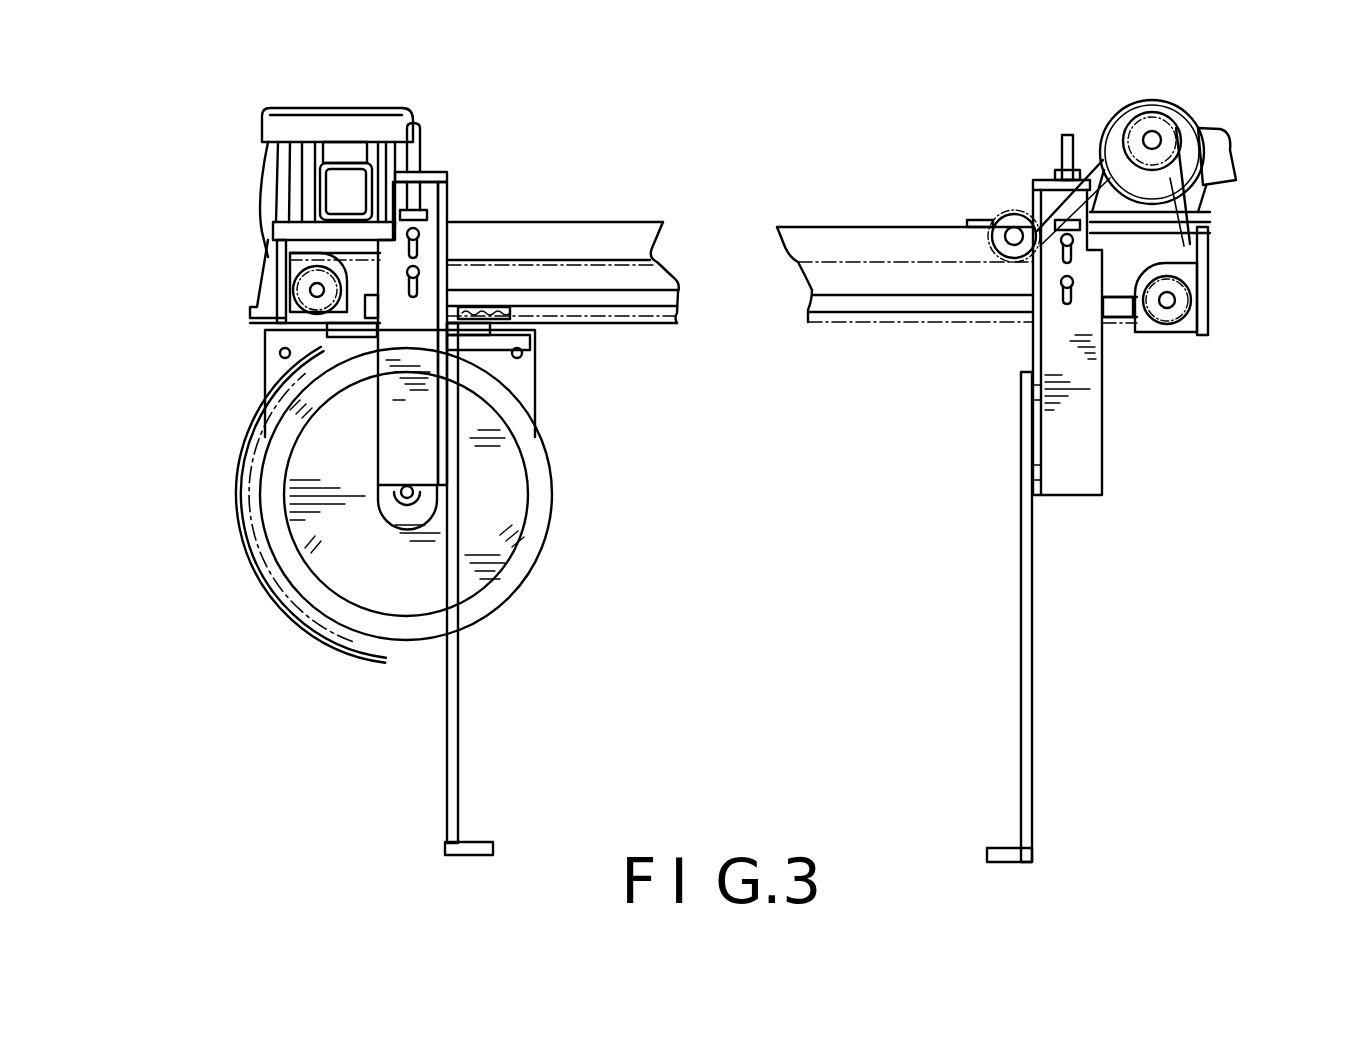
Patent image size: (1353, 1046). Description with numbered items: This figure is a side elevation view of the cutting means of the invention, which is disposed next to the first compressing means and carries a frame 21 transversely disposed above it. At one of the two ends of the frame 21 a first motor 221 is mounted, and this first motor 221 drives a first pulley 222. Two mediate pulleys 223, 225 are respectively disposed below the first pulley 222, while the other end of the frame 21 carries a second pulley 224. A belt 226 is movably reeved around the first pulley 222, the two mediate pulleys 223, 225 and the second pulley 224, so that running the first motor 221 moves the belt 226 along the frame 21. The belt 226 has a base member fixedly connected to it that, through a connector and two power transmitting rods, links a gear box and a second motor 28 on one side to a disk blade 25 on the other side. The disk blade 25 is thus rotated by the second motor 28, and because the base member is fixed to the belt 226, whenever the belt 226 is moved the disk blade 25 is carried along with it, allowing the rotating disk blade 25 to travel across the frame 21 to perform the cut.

The frame 21 is at (604, 247).
The disk blade 25 is at (358, 573).
The second motor 28 is at (262, 178).
The first motor 221 is at (1164, 180).
The first pulley 222 is at (1160, 123).
The mediate pulley 223 is at (1182, 305).
The second pulley 224 is at (300, 297).
The mediate pulley 225 is at (1012, 230).
The belt 226 is at (893, 262).